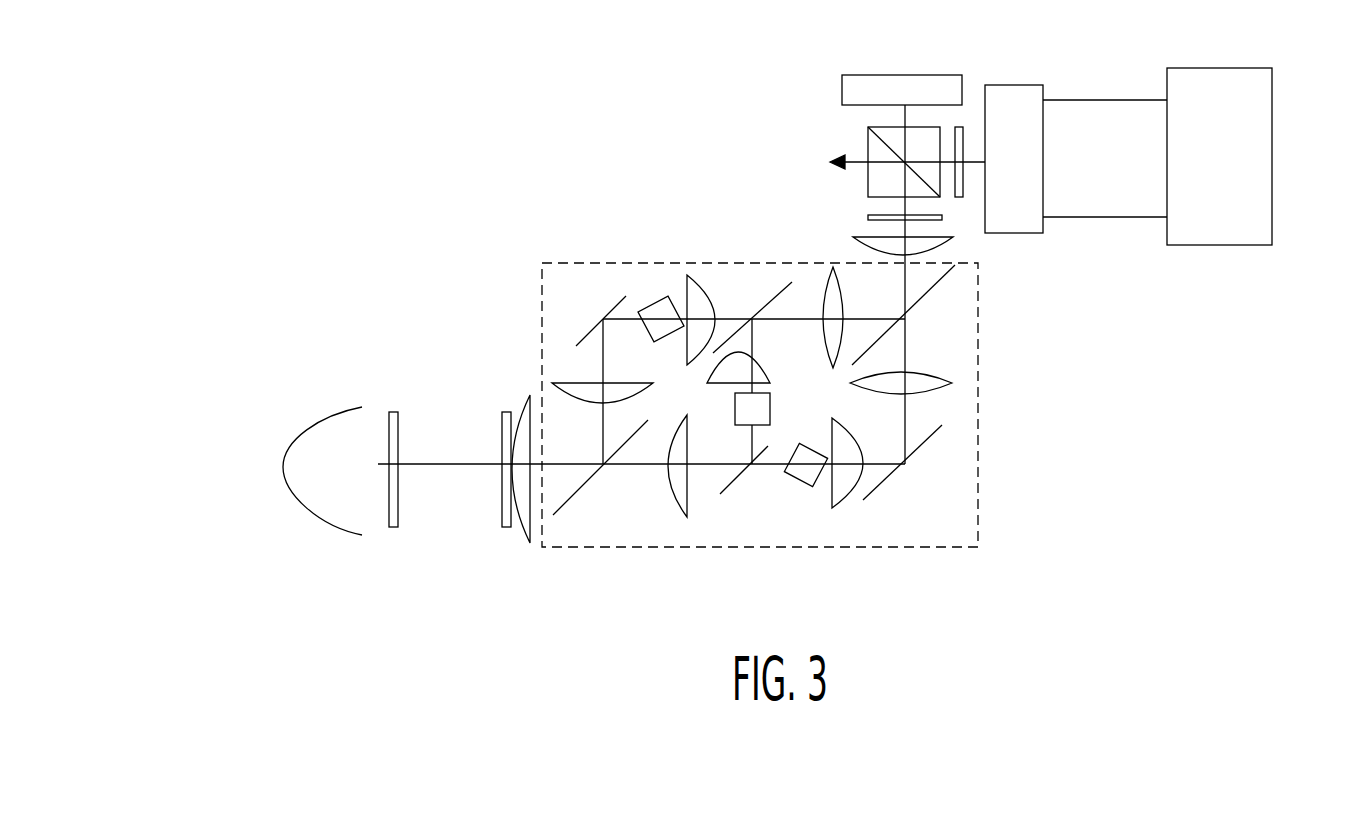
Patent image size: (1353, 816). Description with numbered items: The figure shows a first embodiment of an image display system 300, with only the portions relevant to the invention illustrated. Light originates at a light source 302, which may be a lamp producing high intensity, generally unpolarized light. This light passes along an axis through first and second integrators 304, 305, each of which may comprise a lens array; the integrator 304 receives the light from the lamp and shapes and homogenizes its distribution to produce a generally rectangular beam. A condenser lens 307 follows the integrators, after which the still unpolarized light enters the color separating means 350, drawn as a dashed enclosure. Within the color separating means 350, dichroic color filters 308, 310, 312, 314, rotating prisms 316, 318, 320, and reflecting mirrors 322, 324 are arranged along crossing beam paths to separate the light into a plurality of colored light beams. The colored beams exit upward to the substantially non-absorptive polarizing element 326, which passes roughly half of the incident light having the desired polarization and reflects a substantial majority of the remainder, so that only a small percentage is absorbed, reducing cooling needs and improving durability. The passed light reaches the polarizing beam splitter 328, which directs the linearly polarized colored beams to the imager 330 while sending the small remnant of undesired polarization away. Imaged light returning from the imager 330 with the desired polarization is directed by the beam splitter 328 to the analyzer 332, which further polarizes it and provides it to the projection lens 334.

The image display system 300 is at (382, 70).
The light source 302 is at (290, 455).
The first integrator 304 is at (388, 413).
The second integrator 305 is at (505, 412).
The condenser lens 307 is at (528, 535).
The dichroic color filter 308 is at (600, 470).
The dichroic color filter 310 is at (742, 473).
The dichroic color filter 312 is at (770, 300).
The dichroic color filter 314 is at (925, 297).
The rotating prism 316 is at (648, 331).
The rotating prism 318 is at (733, 412).
The rotating prism 320 is at (803, 440).
The reflecting mirror 322 is at (590, 320).
The reflecting mirror 324 is at (920, 450).
The substantially non-absorptive polarizing element 326 is at (866, 216).
The polarizing beam splitter 328 is at (866, 133).
The imager 330 is at (943, 73).
The analyzer 332 is at (962, 125).
The projection lens 334 is at (1017, 235).
The color separating means 350 is at (979, 453).